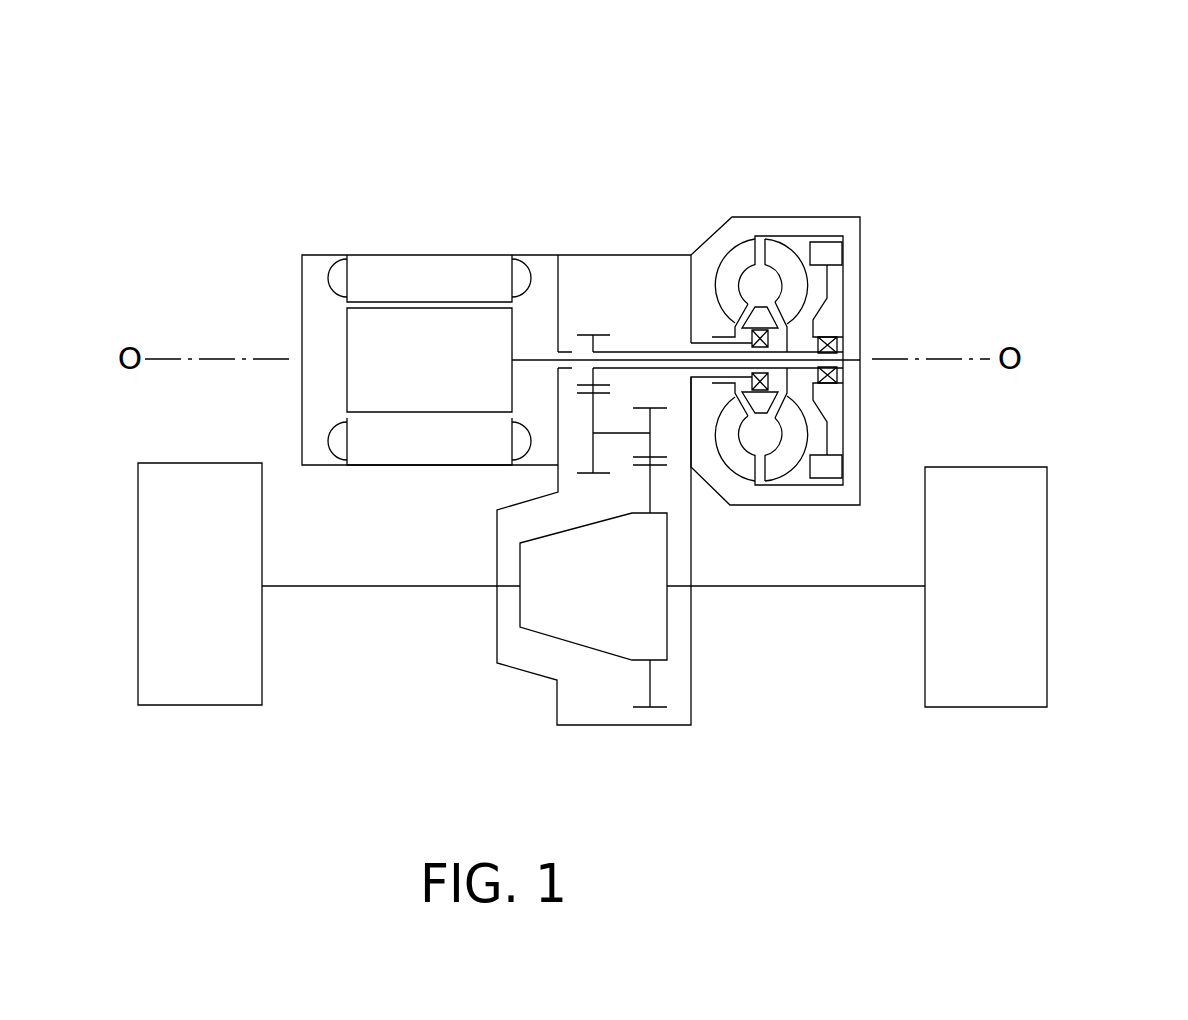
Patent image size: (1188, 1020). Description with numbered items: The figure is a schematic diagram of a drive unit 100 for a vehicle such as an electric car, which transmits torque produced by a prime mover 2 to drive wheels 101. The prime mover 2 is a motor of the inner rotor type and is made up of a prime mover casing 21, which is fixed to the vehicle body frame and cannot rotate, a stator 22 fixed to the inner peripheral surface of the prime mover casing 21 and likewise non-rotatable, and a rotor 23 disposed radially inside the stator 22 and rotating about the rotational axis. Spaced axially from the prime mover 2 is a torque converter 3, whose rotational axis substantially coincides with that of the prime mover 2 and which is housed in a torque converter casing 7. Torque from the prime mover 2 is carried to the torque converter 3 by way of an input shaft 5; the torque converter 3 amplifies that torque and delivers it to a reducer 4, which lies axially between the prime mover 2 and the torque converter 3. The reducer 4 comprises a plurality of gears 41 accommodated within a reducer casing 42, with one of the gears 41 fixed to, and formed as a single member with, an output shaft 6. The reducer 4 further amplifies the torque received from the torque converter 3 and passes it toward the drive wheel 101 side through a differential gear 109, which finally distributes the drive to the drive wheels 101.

The drive unit 100 is at (869, 163).
The drive wheels 101 is at (1047, 502).
The differential gear 109 is at (558, 638).
The prime mover 2 is at (443, 252).
The prime mover casing 21 is at (537, 255).
The stator 22 is at (380, 262).
The rotor 23 is at (368, 351).
The torque converter 3 is at (793, 230).
The reducer 4 is at (597, 322).
The gears 41 is at (587, 395).
The reducer casing 42 is at (610, 255).
The input shaft 5 is at (645, 360).
The output shaft 6 is at (673, 350).
The torque converter casing 7 is at (862, 232).